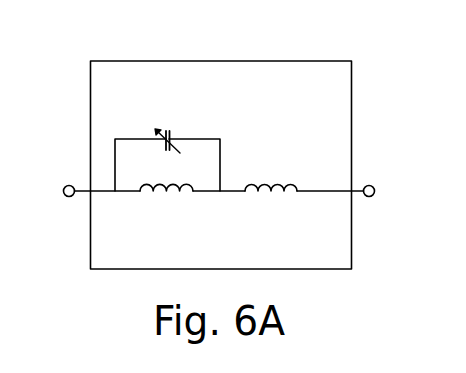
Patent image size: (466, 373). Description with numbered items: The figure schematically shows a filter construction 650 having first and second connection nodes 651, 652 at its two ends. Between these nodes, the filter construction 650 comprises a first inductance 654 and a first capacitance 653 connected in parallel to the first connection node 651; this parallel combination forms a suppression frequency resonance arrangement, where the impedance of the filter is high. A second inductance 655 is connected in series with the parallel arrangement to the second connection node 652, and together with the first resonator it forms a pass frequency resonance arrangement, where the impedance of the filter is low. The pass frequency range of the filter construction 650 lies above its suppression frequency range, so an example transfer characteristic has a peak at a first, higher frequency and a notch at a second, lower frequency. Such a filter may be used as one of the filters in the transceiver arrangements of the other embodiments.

The filter construction 650 is at (221, 165).
The first connection node 651 is at (70, 185).
The second connection node 652 is at (369, 185).
The first capacitance 653 is at (170, 136).
The first inductance 654 is at (194, 190).
The second inductance 655 is at (299, 183).